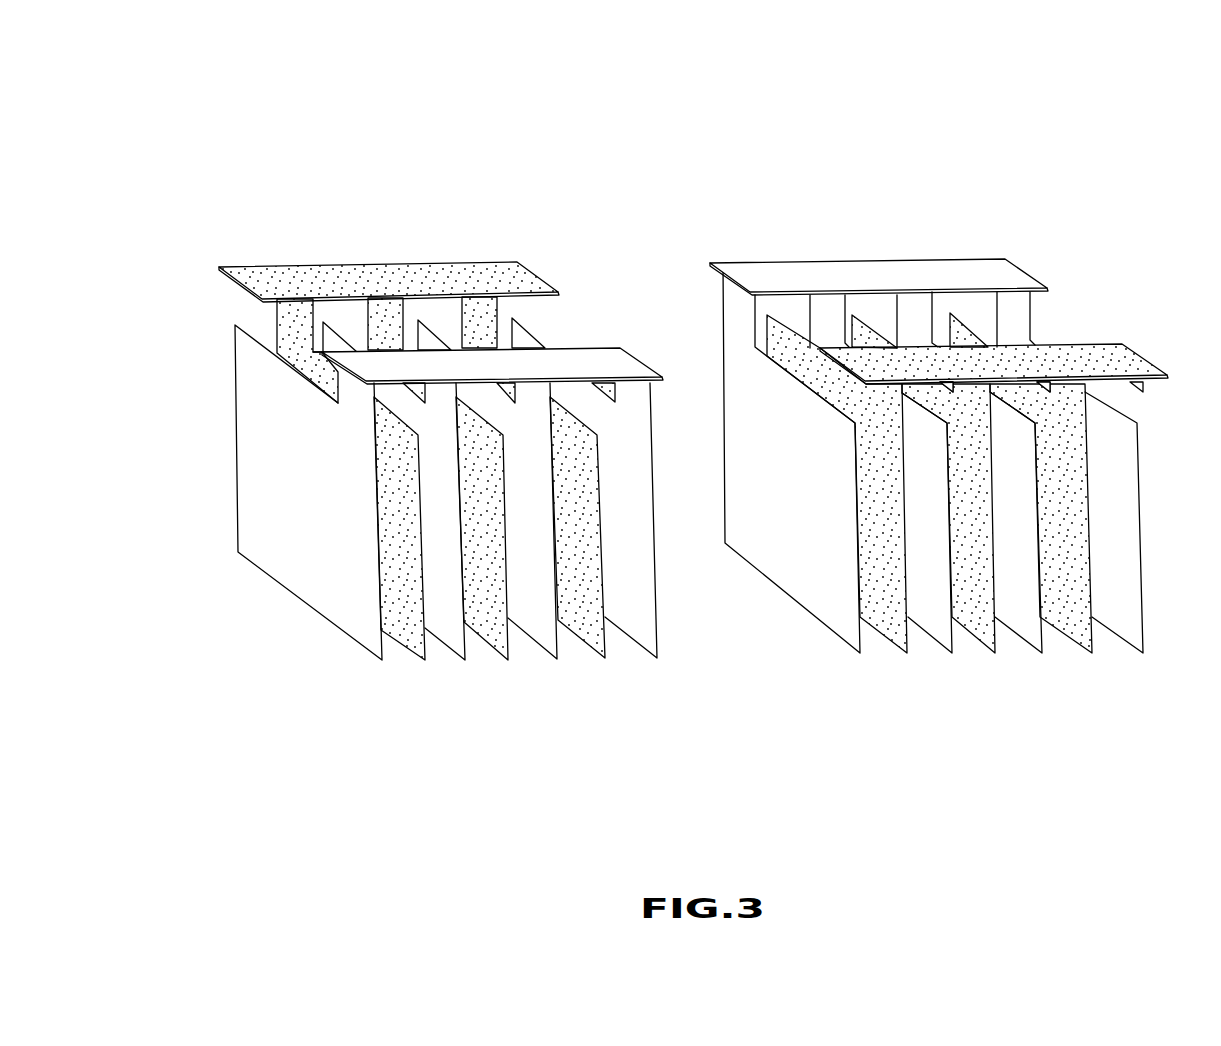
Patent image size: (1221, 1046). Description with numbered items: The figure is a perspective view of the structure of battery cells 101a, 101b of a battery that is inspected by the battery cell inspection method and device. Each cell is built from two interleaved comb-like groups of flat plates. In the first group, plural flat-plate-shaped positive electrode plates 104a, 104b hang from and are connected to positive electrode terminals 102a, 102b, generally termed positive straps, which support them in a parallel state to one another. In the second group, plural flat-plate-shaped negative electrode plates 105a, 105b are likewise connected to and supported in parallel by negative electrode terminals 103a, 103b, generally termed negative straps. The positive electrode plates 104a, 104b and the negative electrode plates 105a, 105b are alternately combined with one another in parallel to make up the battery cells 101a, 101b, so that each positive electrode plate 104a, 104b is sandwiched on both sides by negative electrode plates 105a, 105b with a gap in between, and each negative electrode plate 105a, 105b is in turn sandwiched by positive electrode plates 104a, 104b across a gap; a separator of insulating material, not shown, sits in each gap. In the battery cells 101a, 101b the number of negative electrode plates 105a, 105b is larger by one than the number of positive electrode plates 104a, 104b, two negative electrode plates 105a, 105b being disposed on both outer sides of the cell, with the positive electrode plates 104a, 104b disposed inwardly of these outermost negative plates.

The battery cell 101a is at (490, 166).
The battery cell 101b is at (900, 150).
The positive electrode terminal 102a is at (381, 268).
The positive electrode terminal 102b is at (1108, 345).
The negative electrode terminal 103a is at (570, 365).
The negative electrode terminal 103b is at (988, 268).
The positive electrode plate 104a is at (400, 633).
The positive electrode plate 104b is at (883, 628).
The negative electrode plate 105a is at (650, 697).
The negative electrode plate 105b is at (797, 590).